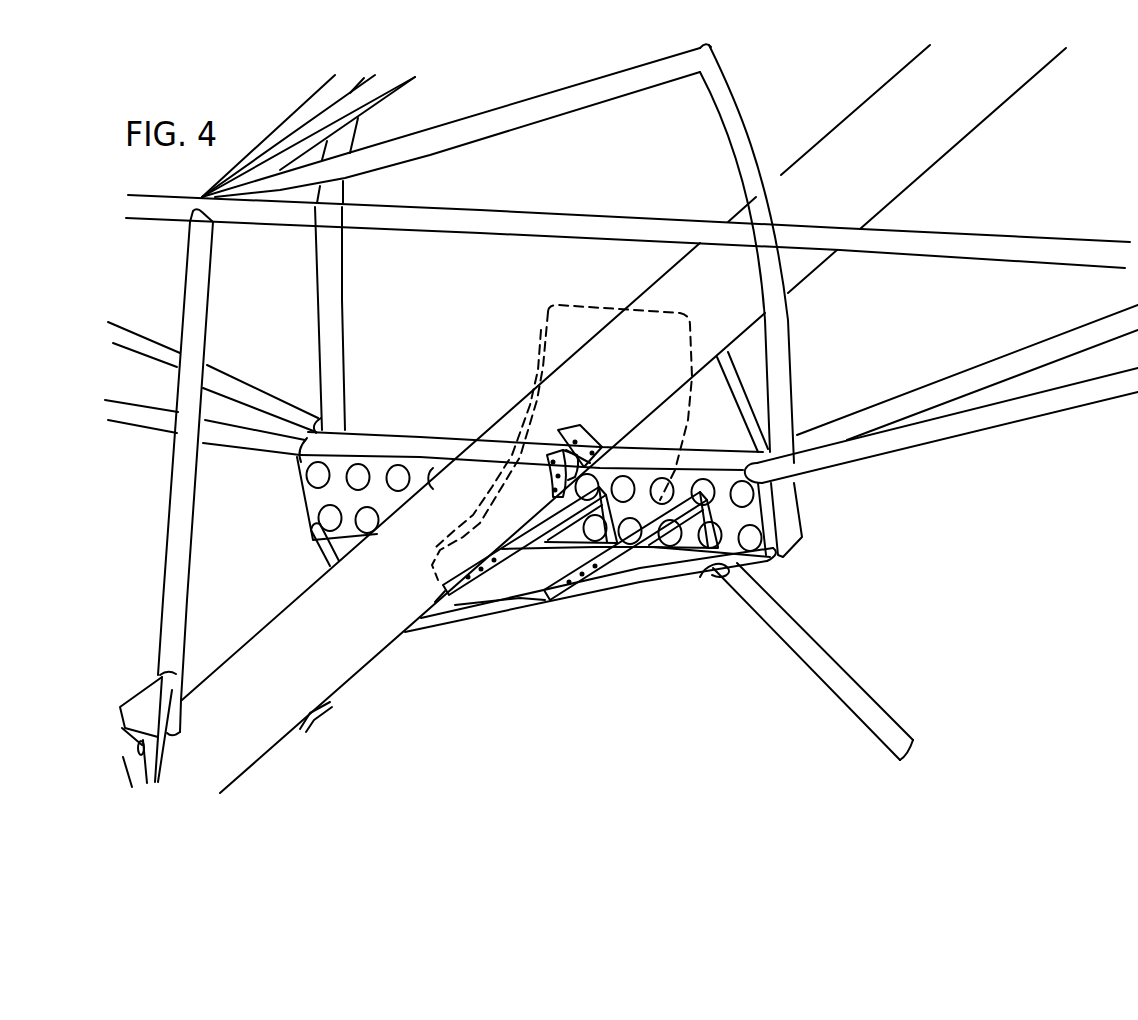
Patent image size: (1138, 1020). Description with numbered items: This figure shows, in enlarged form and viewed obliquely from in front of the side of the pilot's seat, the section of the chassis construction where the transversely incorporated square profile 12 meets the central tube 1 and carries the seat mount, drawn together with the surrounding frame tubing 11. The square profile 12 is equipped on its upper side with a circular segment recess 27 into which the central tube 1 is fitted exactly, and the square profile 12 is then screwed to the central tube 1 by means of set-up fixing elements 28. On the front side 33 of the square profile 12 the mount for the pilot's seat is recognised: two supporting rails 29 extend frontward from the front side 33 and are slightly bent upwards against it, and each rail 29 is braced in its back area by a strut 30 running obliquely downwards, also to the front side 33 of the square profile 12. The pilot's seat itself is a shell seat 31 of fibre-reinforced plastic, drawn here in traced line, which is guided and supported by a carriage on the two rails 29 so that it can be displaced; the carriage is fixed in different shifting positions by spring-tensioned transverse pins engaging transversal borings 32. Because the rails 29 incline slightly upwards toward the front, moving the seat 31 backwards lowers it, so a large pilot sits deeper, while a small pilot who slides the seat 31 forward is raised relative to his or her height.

The central tube 1 is at (360, 642).
The frame 11 is at (757, 152).
The square profile 12 is at (800, 552).
The circular segment recess 27 is at (551, 487).
The fixing elements 28 is at (600, 441).
The supporting rails 29 is at (592, 553).
The strut 30 is at (625, 565).
The shell seat 31 is at (560, 310).
The transversal borings 32 is at (497, 590).
The front side 33 is at (727, 564).